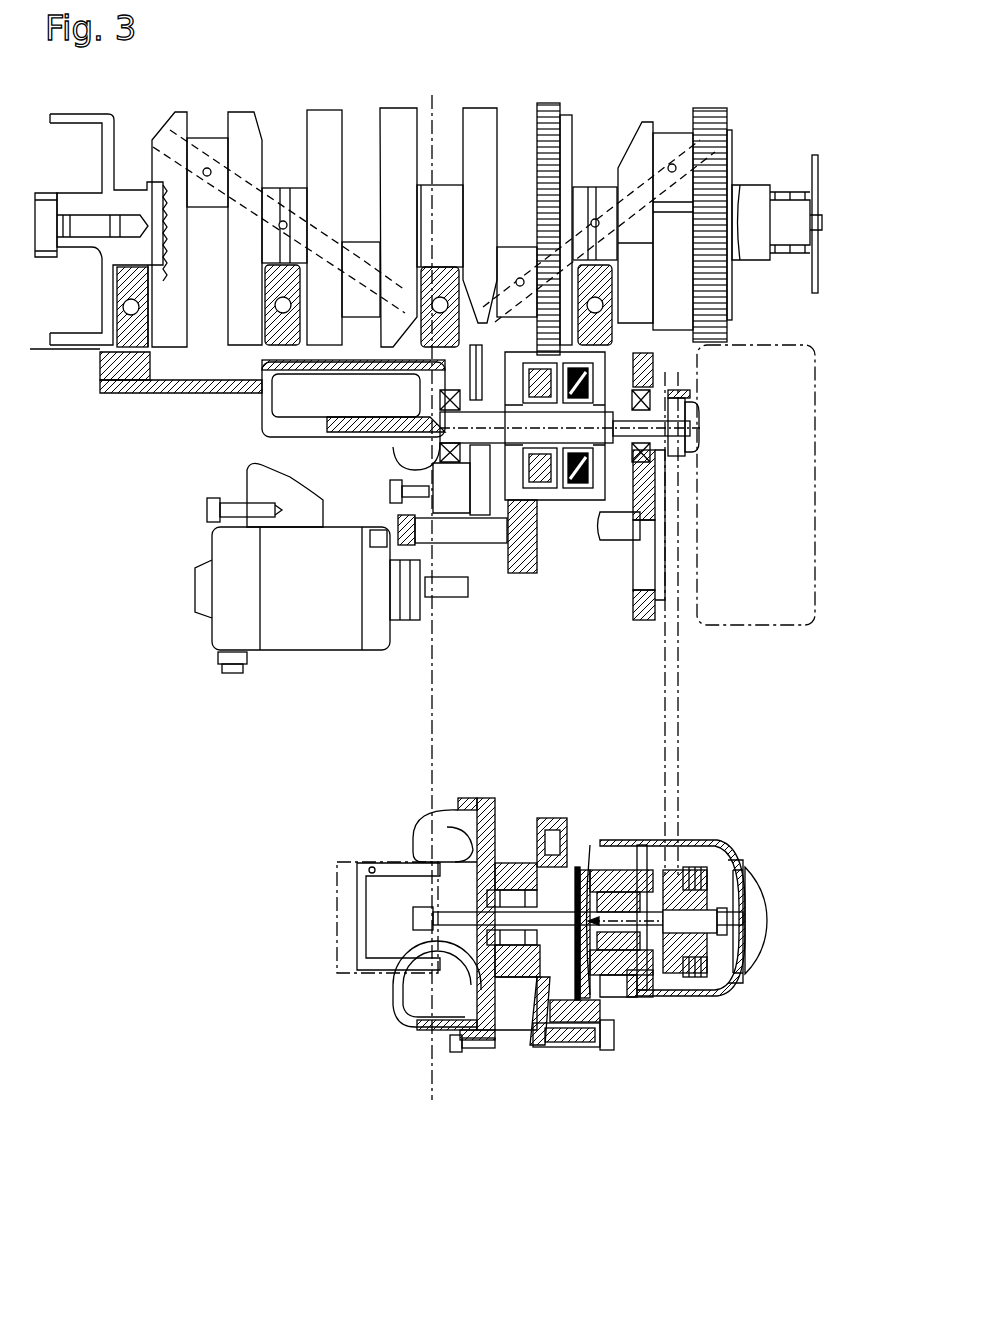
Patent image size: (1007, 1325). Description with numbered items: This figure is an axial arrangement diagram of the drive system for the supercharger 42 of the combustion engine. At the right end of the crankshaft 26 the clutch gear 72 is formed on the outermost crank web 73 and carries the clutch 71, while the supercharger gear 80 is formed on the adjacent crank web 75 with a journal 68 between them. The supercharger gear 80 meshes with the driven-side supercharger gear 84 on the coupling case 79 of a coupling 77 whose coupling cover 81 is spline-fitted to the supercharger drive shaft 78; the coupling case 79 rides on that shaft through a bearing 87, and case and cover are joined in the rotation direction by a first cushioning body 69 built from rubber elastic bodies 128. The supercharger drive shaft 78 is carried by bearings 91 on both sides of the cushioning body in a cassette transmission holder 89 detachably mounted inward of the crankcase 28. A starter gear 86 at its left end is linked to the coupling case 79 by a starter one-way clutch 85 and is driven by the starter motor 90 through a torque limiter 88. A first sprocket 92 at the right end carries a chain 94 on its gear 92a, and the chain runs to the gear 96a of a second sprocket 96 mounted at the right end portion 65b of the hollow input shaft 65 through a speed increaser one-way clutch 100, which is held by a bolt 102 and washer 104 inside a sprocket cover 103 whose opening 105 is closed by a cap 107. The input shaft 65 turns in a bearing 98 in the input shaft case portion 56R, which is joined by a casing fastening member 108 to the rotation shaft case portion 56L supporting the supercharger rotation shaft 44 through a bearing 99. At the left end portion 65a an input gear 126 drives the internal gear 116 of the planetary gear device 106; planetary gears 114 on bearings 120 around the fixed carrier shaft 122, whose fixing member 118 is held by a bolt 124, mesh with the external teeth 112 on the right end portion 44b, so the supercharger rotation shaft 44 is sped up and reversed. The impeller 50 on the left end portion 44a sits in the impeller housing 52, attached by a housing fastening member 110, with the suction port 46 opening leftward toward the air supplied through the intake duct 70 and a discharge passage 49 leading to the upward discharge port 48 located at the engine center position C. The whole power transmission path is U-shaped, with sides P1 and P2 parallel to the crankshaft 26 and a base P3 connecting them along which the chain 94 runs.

The crankshaft 26 is at (752, 200).
The crankcase 28 is at (640, 286).
The supercharger 42 is at (372, 798).
The supercharger rotation shaft 44 is at (462, 917).
The left end portion of the supercharger rotation shaft 44a is at (443, 920).
The right end portion of the supercharger rotation shaft 44b is at (575, 840).
The suction port 46 is at (368, 863).
The discharge port 48 is at (403, 980).
The discharge passage 49 is at (417, 1025).
The impeller 50 is at (436, 858).
The impeller housing 52 is at (433, 1037).
The rotation shaft case portion 56L is at (500, 1020).
The input shaft case portion 56R is at (647, 1000).
The input shaft 65 is at (640, 875).
The left end portion of the input shaft 65a is at (595, 845).
The right end portion of the input shaft 65b is at (727, 920).
The journal 68 is at (608, 186).
The first cushioning body 69 is at (648, 370).
The intake duct 70 is at (347, 862).
The clutch 71 is at (718, 628).
The clutch gear 72 is at (720, 298).
The crank web 73 is at (729, 120).
The crank web 75 is at (533, 134).
The coupling 77 is at (618, 586).
The supercharger drive shaft 78 is at (642, 448).
The coupling case 79 is at (551, 474).
The supercharger gear 80 is at (560, 118).
The coupling cover 81 is at (591, 474).
The driven-side supercharger gear 84 is at (600, 358).
The starter one-way clutch 85 is at (436, 382).
The starter gear 86 is at (482, 360).
The bearing 87 is at (522, 445).
The torque limiter 88 is at (482, 547).
The cassette transmission holder 89 is at (694, 434).
The starter motor 90 is at (330, 536).
The bearings 91 is at (405, 446).
The first sprocket 92 is at (694, 412).
The gear of the first sprocket 92a is at (680, 400).
The chain 94 is at (683, 806).
The second sprocket 96 is at (680, 865).
The gear of the second sprocket 96a is at (660, 982).
The bearing 98 is at (603, 980).
The bearing 99 is at (514, 878).
The speed increaser one-way clutch 100 is at (710, 877).
The bolt 102 is at (717, 935).
The sprocket cover 103 is at (707, 1000).
The washer 104 is at (720, 988).
The opening 105 is at (760, 892).
The planetary gear device 106 is at (550, 1040).
The cap 107 is at (764, 904).
The casing fastening member 108 is at (598, 997).
The housing fastening member 110 is at (455, 1055).
The external teeth 112 is at (533, 868).
The planetary gears 114 is at (537, 1017).
The internal gear 116 is at (588, 1017).
The fixing member 118 is at (574, 840).
The bearing 120 is at (603, 997).
The carrier shaft 122 is at (537, 953).
The bolt 124 is at (583, 850).
The input gear 126 is at (603, 1003).
The elastic bodies 128 is at (700, 326).
The center position C is at (423, 1085).
The side of the power transmission path P1 is at (645, 490).
The side of the power transmission path P2 is at (648, 845).
The base of the power transmission path P3 is at (673, 669).